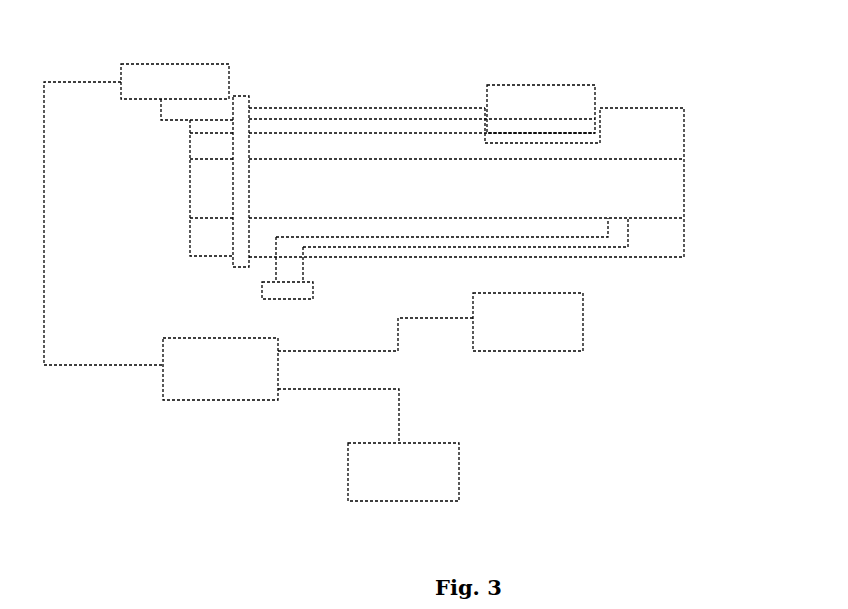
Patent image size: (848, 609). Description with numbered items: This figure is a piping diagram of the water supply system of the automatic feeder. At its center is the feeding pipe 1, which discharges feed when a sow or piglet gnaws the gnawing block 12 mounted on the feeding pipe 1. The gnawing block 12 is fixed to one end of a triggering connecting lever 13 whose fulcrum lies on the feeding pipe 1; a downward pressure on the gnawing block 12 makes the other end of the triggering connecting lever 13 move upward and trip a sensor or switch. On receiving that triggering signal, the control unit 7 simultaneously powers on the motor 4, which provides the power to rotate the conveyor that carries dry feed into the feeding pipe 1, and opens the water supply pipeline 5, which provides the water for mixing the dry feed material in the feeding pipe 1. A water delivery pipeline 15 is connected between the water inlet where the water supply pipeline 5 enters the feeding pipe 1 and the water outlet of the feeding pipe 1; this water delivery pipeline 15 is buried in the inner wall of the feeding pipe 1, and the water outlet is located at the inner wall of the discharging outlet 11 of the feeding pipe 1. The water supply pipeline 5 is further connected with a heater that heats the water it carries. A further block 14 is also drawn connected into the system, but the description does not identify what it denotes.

The feeding pipe 1 is at (648, 208).
The motor 4 is at (430, 322).
The water supply pipeline 5 is at (294, 369).
The control unit 7 is at (220, 369).
The discharging outlet 11 is at (498, 165).
The gnawing block 12 is at (561, 82).
The triggering connecting lever 13 is at (422, 100).
The pump / flow drive 14 is at (196, 72).
The water delivery pipeline 15 is at (480, 263).